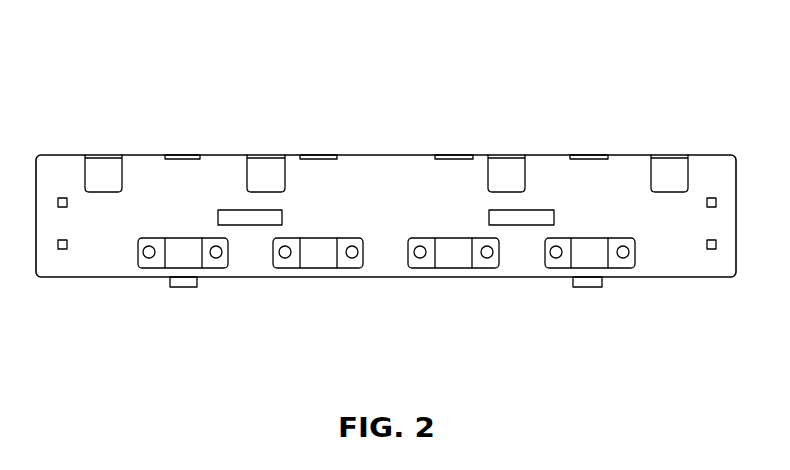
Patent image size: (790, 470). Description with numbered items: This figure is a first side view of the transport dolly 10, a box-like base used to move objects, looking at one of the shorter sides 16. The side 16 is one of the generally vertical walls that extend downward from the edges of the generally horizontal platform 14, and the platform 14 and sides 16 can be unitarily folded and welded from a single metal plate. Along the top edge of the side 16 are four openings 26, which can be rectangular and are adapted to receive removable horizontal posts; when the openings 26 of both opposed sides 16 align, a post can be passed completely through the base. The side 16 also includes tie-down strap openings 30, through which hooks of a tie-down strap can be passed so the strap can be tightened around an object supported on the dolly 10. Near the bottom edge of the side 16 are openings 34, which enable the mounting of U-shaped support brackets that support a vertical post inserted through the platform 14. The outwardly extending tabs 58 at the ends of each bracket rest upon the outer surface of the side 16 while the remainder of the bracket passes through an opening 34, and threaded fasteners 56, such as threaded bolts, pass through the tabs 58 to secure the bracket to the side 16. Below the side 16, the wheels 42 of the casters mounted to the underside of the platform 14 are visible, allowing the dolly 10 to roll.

The transport dolly 10 is at (638, 63).
The platform 14 is at (552, 155).
The sides 16 is at (378, 168).
The openings 26 is at (103, 170).
The tie-down strap openings 30 is at (235, 218).
The openings 34 is at (184, 253).
The wheel 42 is at (183, 287).
The threaded fasteners 56 is at (150, 245).
The tabs 58 is at (138, 260).